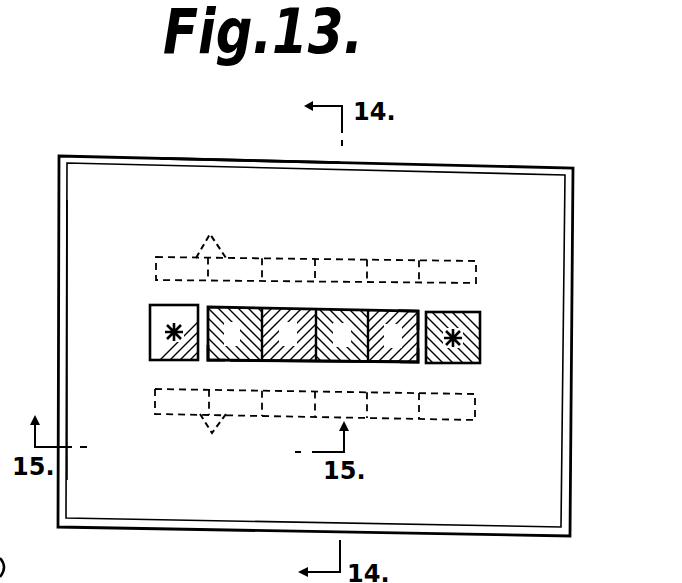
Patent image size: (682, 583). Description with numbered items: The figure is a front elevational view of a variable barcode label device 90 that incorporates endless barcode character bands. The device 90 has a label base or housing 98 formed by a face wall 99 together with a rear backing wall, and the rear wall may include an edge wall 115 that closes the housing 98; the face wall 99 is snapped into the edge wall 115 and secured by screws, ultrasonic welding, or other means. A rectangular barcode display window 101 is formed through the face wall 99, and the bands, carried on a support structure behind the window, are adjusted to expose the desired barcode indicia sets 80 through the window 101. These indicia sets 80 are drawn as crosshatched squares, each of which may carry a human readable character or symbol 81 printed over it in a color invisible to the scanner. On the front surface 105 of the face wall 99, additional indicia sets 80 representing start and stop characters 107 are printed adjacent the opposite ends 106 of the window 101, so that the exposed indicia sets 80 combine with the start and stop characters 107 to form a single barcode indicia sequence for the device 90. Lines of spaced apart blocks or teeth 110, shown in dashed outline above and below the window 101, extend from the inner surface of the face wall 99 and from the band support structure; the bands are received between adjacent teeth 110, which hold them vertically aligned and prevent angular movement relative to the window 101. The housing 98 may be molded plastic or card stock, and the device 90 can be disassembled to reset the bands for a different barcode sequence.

The variable barcode label device 90 is at (174, 118).
The label base or housing 98 is at (54, 214).
The face wall 99 is at (453, 177).
The edge wall 115 is at (254, 164).
The front surface 105 is at (90, 278).
The start and stop characters 107 is at (152, 318).
The blocks or teeth 110 is at (201, 440).
The barcode indicia sets 80 is at (327, 312).
The characters or symbols 81 is at (327, 362).
The barcode display window 101 is at (412, 313).
The opposite ends of the window 106 is at (224, 356).